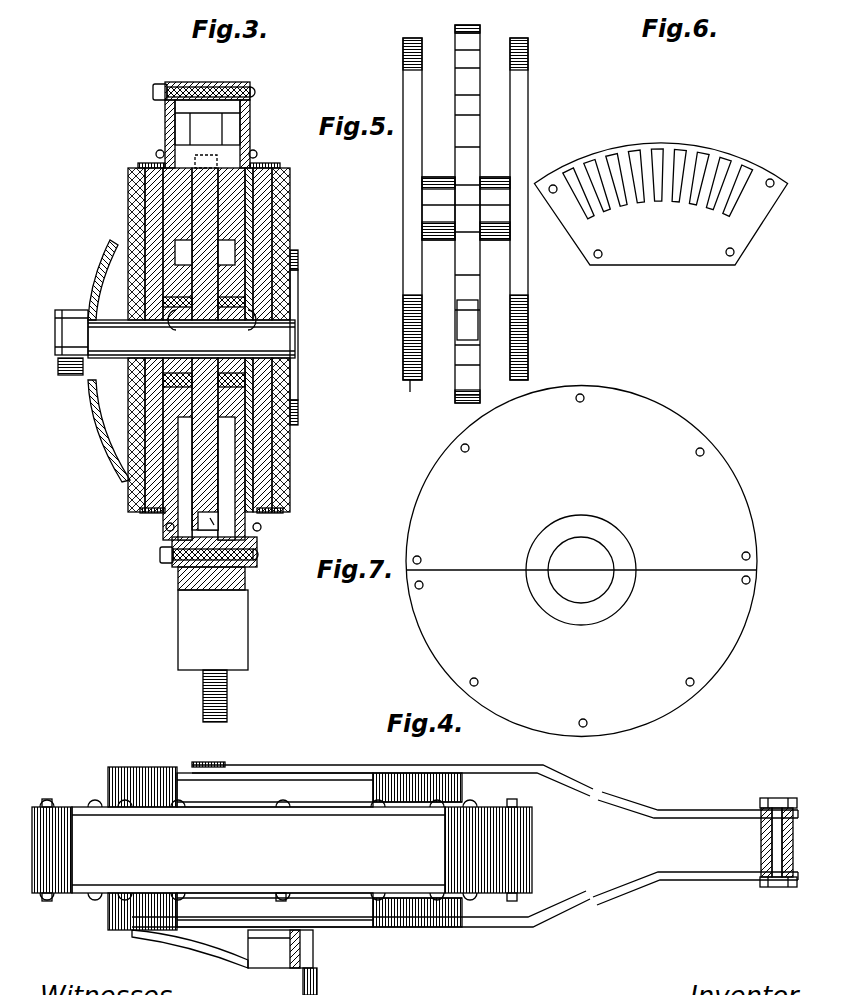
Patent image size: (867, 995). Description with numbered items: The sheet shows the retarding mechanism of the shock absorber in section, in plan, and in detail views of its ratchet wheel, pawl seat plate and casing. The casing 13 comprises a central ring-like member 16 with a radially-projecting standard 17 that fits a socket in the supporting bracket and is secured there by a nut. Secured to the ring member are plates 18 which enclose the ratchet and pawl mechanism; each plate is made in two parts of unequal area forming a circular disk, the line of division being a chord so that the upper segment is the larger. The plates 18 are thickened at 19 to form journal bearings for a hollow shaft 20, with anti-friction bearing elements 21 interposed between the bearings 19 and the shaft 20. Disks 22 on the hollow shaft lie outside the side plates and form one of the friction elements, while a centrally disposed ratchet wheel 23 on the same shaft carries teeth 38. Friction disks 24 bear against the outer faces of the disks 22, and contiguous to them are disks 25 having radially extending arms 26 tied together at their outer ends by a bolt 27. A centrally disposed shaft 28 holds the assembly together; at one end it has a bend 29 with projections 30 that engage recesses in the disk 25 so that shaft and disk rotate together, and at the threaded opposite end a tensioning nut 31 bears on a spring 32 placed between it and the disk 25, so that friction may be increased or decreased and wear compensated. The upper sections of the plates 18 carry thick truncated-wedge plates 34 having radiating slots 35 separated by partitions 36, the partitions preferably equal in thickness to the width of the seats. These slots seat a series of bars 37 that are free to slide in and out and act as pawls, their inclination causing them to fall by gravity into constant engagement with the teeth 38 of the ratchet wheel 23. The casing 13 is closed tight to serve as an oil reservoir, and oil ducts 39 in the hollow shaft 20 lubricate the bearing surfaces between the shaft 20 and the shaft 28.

In FIG. 4, the casing 13 is at (258, 850).
In FIG. 3, the central ring-like member 16 is at (210, 82).
In FIG. 4, the central ring-like member 16 is at (92, 870).
In FIG. 3, the radially-projecting standard 17 is at (213, 644).
In FIG. 3, the plates 18 is at (158, 86).
In FIG. 7, the plates 18 is at (581, 560).
In FIG. 4, the plates 18 is at (72, 805).
In FIG. 3, the journal bearings 19 is at (150, 262).
In FIG. 7, the journal bearings 19 is at (568, 640).
In FIG. 3, the hollow shaft 20 is at (295, 330).
In FIG. 3, the anti-friction bearing elements 21 is at (160, 300).
In FIG. 5, the anti-friction bearing elements 21 is at (543, 240).
In FIG. 3, the disks 22 is at (150, 450).
In FIG. 5, the disks 22 is at (530, 74).
In FIG. 3, the ratchet wheel 23 is at (218, 476).
In FIG. 5, the ratchet wheel 23 is at (480, 120).
In FIG. 3, the friction disks 24 is at (280, 500).
In FIG. 3, the disks 25 is at (283, 510).
In FIG. 4, the disks 25 is at (158, 770).
In FIG. 4, the radially extending arms 26 is at (578, 795).
In FIG. 4, the bolt 27 is at (770, 798).
In FIG. 3, the centrally disposed shaft 28 is at (55, 340).
In FIG. 3, the bend 29 is at (298, 358).
In FIG. 4, the bend 29 is at (278, 765).
In FIG. 3, the projections 30 is at (298, 262).
In FIG. 3, the tensioning nut 31 is at (70, 376).
In FIG. 4, the tensioning nut 31 is at (318, 990).
In FIG. 3, the spring 32 is at (92, 296).
In FIG. 4, the spring 32 is at (313, 940).
In FIG. 3, the plates 34 is at (128, 183).
In FIG. 6, the plates 34 is at (660, 204).
In FIG. 3, the slots 35 is at (170, 128).
In FIG. 6, the slots 35 is at (660, 150).
In FIG. 6, the partitions 36 is at (614, 158).
In FIG. 3, the bars 37 is at (183, 146).
In FIG. 3, the teeth 38 is at (255, 528).
In FIG. 5, the teeth 38 is at (470, 322).
In FIG. 3, the oil ducts 39 is at (247, 320).